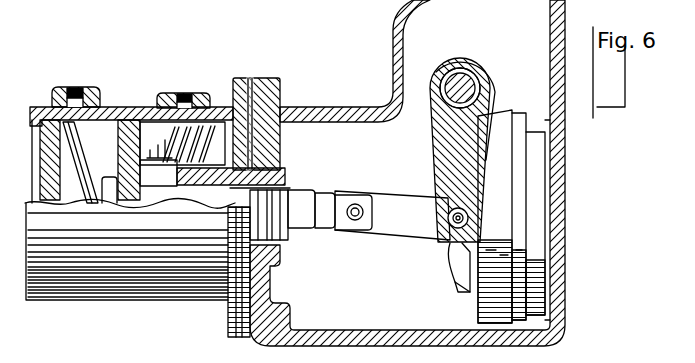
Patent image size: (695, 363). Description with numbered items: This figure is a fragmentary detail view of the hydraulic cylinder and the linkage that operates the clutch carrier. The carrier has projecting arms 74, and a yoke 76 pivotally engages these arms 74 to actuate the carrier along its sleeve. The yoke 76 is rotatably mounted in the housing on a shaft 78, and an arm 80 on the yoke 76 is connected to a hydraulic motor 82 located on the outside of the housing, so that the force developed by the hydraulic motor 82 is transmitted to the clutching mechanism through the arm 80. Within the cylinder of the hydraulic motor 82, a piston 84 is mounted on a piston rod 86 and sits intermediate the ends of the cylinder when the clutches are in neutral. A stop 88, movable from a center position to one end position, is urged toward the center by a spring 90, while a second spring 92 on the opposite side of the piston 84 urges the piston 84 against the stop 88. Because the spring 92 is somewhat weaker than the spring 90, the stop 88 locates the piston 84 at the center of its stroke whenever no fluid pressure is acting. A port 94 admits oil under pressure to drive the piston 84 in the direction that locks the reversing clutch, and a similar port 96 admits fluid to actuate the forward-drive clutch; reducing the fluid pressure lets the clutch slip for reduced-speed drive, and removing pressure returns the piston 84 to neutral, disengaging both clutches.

The projecting arms 74 is at (452, 251).
The yoke 76 is at (438, 191).
The shaft 78 is at (457, 77).
The arm 80 is at (437, 119).
The hydraulic motor 82 is at (118, 118).
The piston 84 is at (132, 128).
The piston rod 86 is at (290, 213).
The stop 88 is at (176, 160).
The spring 90 is at (178, 143).
The second spring 92 is at (84, 158).
The port 94 is at (77, 102).
The port 96 is at (182, 105).